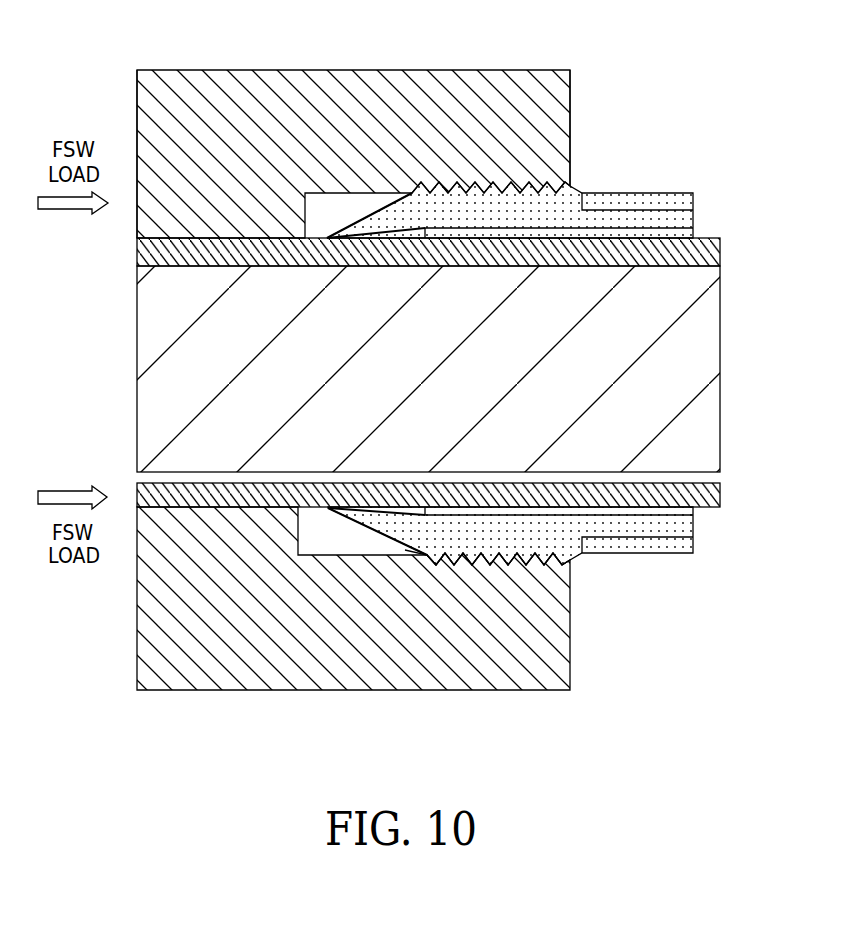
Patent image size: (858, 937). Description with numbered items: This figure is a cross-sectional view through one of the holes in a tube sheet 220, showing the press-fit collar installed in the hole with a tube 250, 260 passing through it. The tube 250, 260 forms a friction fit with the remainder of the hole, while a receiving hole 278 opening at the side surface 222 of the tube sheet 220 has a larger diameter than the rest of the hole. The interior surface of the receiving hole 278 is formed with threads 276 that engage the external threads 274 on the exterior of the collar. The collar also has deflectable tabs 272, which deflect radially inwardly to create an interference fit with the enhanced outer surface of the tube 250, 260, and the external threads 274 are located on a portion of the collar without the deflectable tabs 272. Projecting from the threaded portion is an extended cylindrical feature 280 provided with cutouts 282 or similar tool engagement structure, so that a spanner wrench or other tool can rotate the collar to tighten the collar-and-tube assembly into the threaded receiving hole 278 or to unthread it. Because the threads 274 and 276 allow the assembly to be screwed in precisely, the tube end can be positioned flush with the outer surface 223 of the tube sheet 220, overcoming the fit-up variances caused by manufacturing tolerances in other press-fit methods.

The tube sheet 220 is at (239, 69).
The side surface 222 is at (570, 128).
The outer surface 223 is at (137, 108).
The tube 250 is at (481, 372).
The tube 260 is at (722, 262).
The deflectable tabs 272 is at (367, 529).
The external threads 274 is at (574, 557).
The threads 276 is at (423, 557).
The receiving hole 278 is at (348, 194).
The extended cylindrical feature 280 is at (697, 530).
The cutouts 282 is at (674, 555).